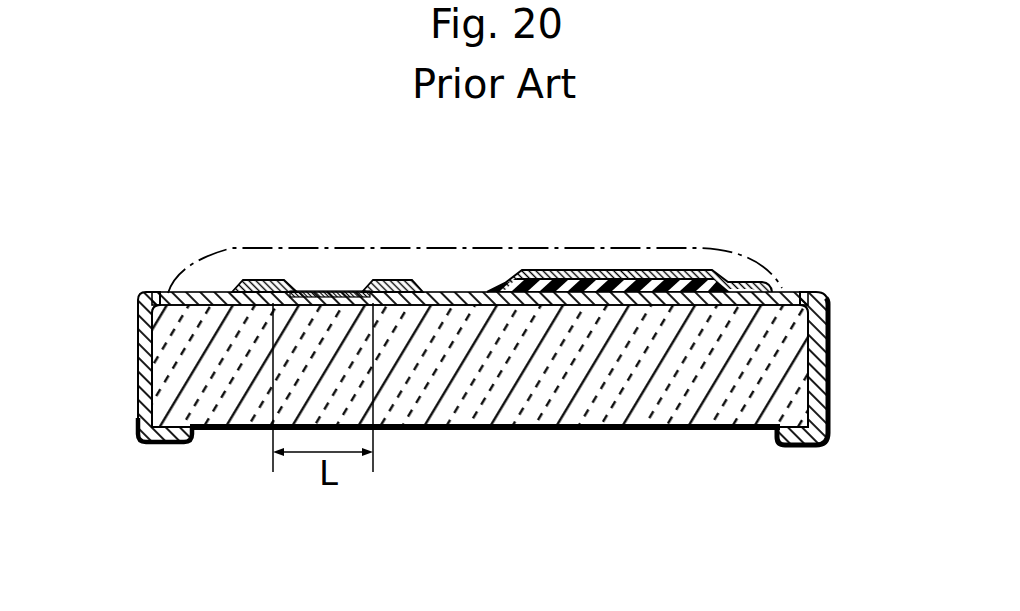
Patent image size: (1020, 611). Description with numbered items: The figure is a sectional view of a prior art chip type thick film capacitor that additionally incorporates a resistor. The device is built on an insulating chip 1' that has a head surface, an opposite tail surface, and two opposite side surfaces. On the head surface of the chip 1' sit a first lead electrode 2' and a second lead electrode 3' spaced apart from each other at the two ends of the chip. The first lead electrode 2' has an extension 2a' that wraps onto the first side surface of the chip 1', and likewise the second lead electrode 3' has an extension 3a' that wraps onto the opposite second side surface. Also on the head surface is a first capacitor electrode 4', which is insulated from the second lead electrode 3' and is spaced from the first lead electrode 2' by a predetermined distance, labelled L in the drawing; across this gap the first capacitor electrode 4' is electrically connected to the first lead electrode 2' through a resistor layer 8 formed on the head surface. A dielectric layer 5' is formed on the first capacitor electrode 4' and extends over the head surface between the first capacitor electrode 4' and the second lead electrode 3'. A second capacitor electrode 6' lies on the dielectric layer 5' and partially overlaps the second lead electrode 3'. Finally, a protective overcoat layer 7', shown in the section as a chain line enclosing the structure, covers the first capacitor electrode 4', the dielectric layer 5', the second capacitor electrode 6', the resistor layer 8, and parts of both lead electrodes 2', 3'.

The insulating chip 1' is at (480, 420).
The first lead electrode 2' is at (165, 322).
The extension of first lead electrode 2a' is at (116, 412).
The second lead electrode 3' is at (815, 330).
The extension of second lead electrode 3a' is at (844, 371).
The first capacitor electrode 4' is at (480, 247).
The dielectric layer 5' is at (629, 228).
The second capacitor electrode 6' is at (608, 228).
The protective overcoat layer 7' is at (475, 228).
The resistor layer 8 is at (310, 297).